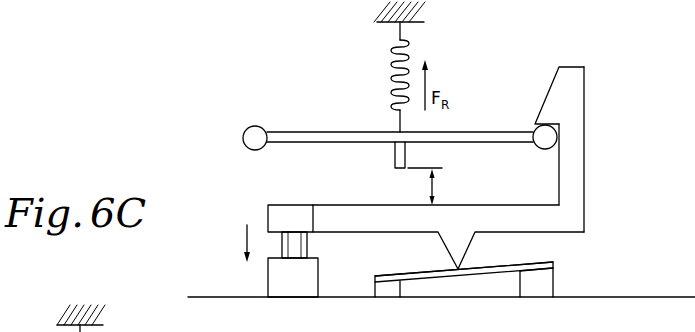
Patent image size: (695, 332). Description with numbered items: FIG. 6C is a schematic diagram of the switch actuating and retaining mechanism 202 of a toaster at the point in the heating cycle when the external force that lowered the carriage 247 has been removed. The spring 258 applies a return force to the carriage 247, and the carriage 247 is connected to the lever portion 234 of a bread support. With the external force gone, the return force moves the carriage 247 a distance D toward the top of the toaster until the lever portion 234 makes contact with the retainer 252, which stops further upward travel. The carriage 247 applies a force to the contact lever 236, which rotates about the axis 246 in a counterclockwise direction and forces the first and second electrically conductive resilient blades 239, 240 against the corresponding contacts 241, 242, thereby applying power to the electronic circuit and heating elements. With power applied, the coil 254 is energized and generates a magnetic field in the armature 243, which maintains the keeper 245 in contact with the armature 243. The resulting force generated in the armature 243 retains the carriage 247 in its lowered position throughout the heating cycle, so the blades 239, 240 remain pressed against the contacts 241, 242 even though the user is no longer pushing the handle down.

The switch actuating and retaining mechanism 202 is at (379, 163).
The lever portion 234 is at (539, 132).
The contact lever 236 is at (460, 213).
The first resilient blade 239 is at (387, 276).
The second resilient blade 240 is at (464, 269).
The contact 241 is at (400, 290).
The contact 242 is at (536, 269).
The armature 243 is at (286, 247).
The keeper 245 is at (301, 210).
The axis 246 is at (572, 220).
The carriage 247 is at (256, 128).
The retainer 252 is at (563, 97).
The coil 254 is at (277, 277).
The spring 258 is at (396, 78).